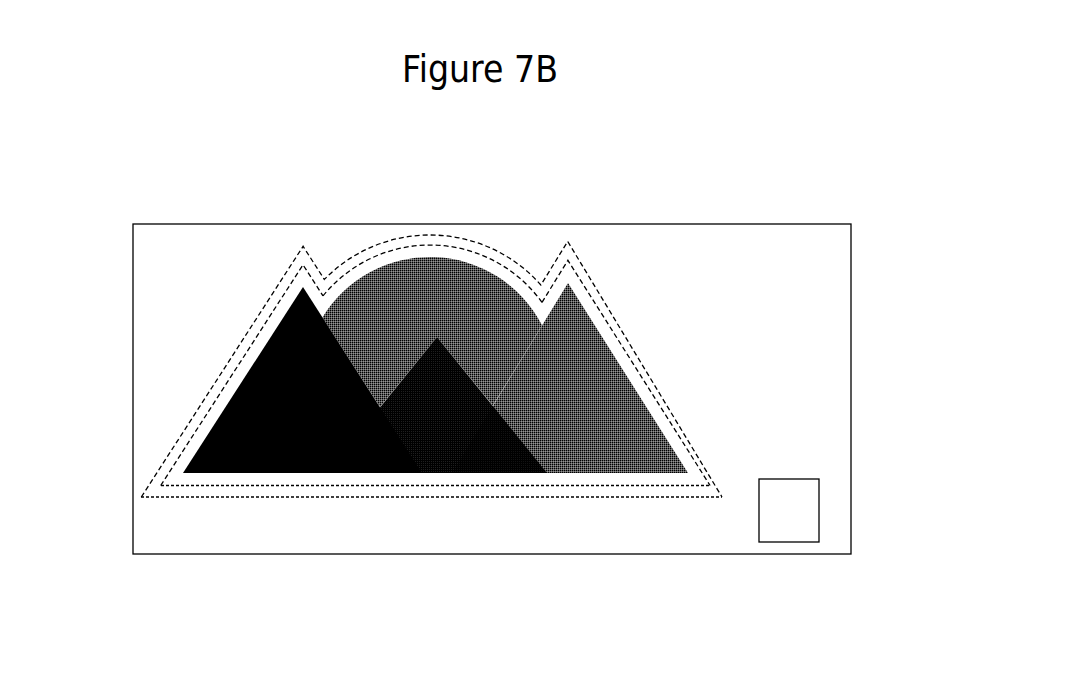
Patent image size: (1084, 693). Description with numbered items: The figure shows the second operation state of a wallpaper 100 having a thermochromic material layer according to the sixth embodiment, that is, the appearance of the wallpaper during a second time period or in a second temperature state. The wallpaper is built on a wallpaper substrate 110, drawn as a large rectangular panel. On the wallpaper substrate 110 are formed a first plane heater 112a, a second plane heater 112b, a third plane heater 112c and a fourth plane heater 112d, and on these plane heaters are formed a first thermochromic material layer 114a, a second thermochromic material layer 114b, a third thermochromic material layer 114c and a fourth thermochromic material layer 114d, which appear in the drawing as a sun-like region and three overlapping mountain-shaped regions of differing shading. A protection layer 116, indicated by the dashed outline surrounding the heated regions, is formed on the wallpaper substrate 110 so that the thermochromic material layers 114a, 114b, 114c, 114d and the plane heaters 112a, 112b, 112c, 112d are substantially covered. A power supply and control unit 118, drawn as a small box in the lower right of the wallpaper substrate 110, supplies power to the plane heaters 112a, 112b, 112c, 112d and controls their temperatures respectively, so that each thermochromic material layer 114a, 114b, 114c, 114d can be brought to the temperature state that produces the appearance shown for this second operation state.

The display device 100 is at (832, 157).
The wallpaper substrate 110 is at (256, 232).
The first plane heater 112a is at (472, 240).
The second plane heater 112b is at (303, 481).
The third plane heater 112c is at (508, 395).
The fourth plane heater 112d is at (705, 497).
The first thermochromic material layer 114a is at (396, 256).
The second thermochromic material layer 114b is at (210, 474).
The third thermochromic material layer 114c is at (392, 475).
The fourth thermochromic material layer 114d is at (612, 474).
The protection layer 116 is at (162, 498).
The power supply and control unit 118 is at (786, 543).